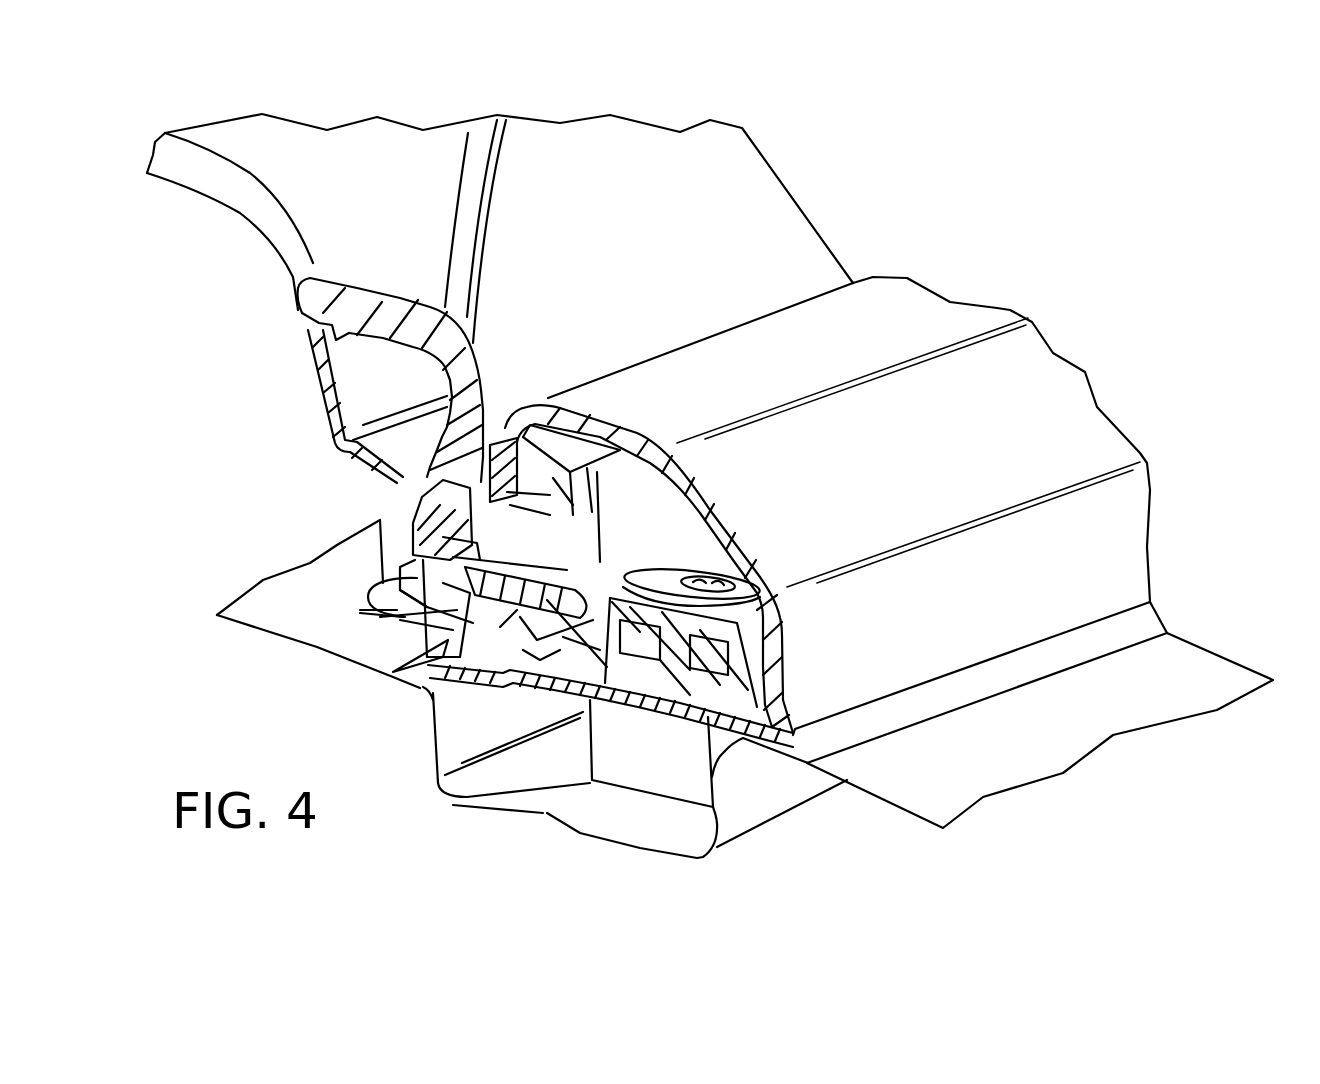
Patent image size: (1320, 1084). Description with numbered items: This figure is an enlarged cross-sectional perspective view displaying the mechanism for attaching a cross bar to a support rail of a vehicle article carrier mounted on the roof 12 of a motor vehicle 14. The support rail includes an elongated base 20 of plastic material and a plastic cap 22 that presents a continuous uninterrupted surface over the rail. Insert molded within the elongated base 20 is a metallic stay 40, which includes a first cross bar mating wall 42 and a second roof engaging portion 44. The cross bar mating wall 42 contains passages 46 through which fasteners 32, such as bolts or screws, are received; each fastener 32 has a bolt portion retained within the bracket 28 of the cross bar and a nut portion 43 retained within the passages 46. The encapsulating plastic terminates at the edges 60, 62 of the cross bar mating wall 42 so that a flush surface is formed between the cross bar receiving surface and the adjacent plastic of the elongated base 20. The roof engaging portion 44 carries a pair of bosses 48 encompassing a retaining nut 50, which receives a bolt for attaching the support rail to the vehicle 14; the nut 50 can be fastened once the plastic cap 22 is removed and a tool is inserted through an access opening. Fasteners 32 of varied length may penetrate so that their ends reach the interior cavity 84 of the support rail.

The roof 12 is at (992, 274).
The motor vehicle 14 is at (1133, 630).
The elongated base 20 is at (580, 430).
The plastic cap 22 is at (821, 461).
The bracket 28 is at (380, 222).
The fastener 32 is at (410, 530).
The metallic stay 40 is at (660, 508).
The cross bar mating wall 42 is at (383, 612).
The nut portion 43 is at (513, 410).
The roof engaging portion 44 is at (600, 623).
The passages 46 is at (397, 610).
The bosses 48 is at (680, 782).
The retaining nut 50 is at (743, 582).
The edge 60 is at (490, 424).
The edge 62 is at (445, 640).
The interior cavity 84 is at (606, 548).